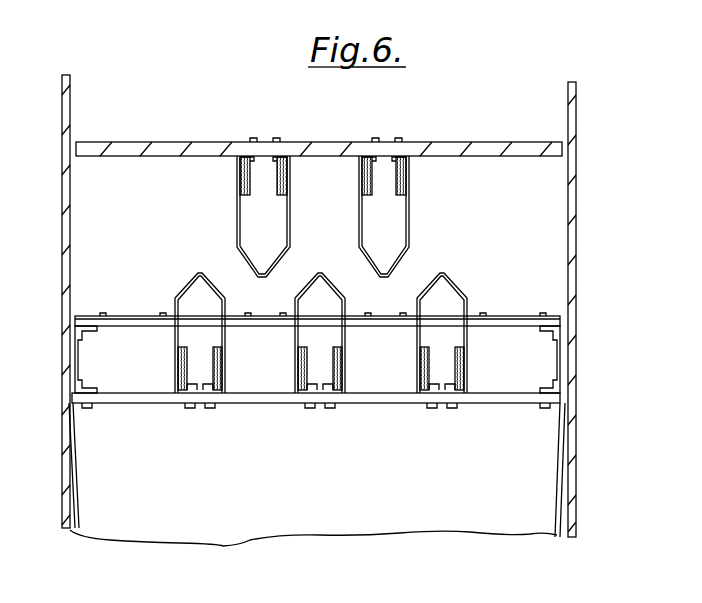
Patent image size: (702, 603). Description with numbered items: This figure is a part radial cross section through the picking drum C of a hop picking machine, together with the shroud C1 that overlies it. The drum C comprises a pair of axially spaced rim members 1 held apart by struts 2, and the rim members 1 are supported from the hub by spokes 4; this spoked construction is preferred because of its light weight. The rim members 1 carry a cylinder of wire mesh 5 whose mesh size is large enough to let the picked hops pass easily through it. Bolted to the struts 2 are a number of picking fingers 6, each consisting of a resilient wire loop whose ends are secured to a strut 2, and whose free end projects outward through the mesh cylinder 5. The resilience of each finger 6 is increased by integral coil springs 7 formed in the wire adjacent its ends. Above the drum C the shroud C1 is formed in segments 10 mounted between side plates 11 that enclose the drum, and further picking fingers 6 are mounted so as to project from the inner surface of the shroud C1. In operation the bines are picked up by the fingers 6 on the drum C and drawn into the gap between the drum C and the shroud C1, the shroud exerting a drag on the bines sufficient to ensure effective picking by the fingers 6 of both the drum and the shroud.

The rim member 1 is at (85, 345).
The strut 2 is at (370, 393).
The spoke 4 is at (78, 515).
The cylinder of wire mesh 5 is at (555, 318).
The picking finger 6 is at (320, 272).
The coil spring 7 is at (410, 183).
The segment 10 is at (140, 148).
The side plate 11 is at (62, 214).
The picking drum C is at (368, 408).
The shroud C1 is at (524, 142).